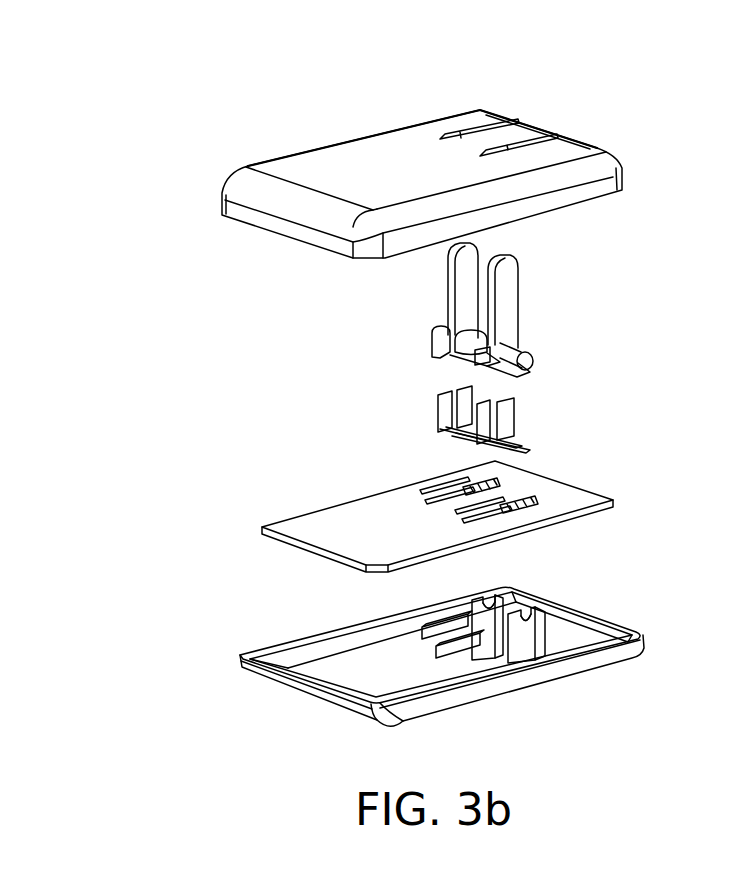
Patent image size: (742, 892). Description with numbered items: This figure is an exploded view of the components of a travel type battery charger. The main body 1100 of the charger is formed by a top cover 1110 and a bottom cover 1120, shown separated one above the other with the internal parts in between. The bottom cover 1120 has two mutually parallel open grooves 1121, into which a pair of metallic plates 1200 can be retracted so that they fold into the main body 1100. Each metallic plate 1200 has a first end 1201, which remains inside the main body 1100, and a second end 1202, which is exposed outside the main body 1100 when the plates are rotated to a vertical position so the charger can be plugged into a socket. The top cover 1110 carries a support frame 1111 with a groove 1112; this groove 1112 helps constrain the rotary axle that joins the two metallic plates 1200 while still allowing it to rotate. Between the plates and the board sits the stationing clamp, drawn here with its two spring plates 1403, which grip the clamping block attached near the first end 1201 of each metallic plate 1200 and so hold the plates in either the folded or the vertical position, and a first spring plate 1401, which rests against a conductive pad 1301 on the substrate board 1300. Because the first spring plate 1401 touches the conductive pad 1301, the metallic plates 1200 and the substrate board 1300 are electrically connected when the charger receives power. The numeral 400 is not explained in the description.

The main body 1100 is at (179, 772).
The bottom cover 1120 is at (458, 173).
The open grooves 1121 is at (522, 119).
The metallic plates 1200 is at (458, 283).
The second end 1202 is at (470, 255).
The first end 1201 is at (507, 377).
The contact spring assembly 400 is at (453, 430).
The spring plates 1403 is at (458, 386).
The first spring plate 1401 is at (487, 448).
The substrate board 1300 is at (426, 508).
The conductive pad 1301 is at (440, 474).
The top cover 1110 is at (417, 661).
The support frame 1111 is at (569, 661).
The groove 1112 is at (490, 600).